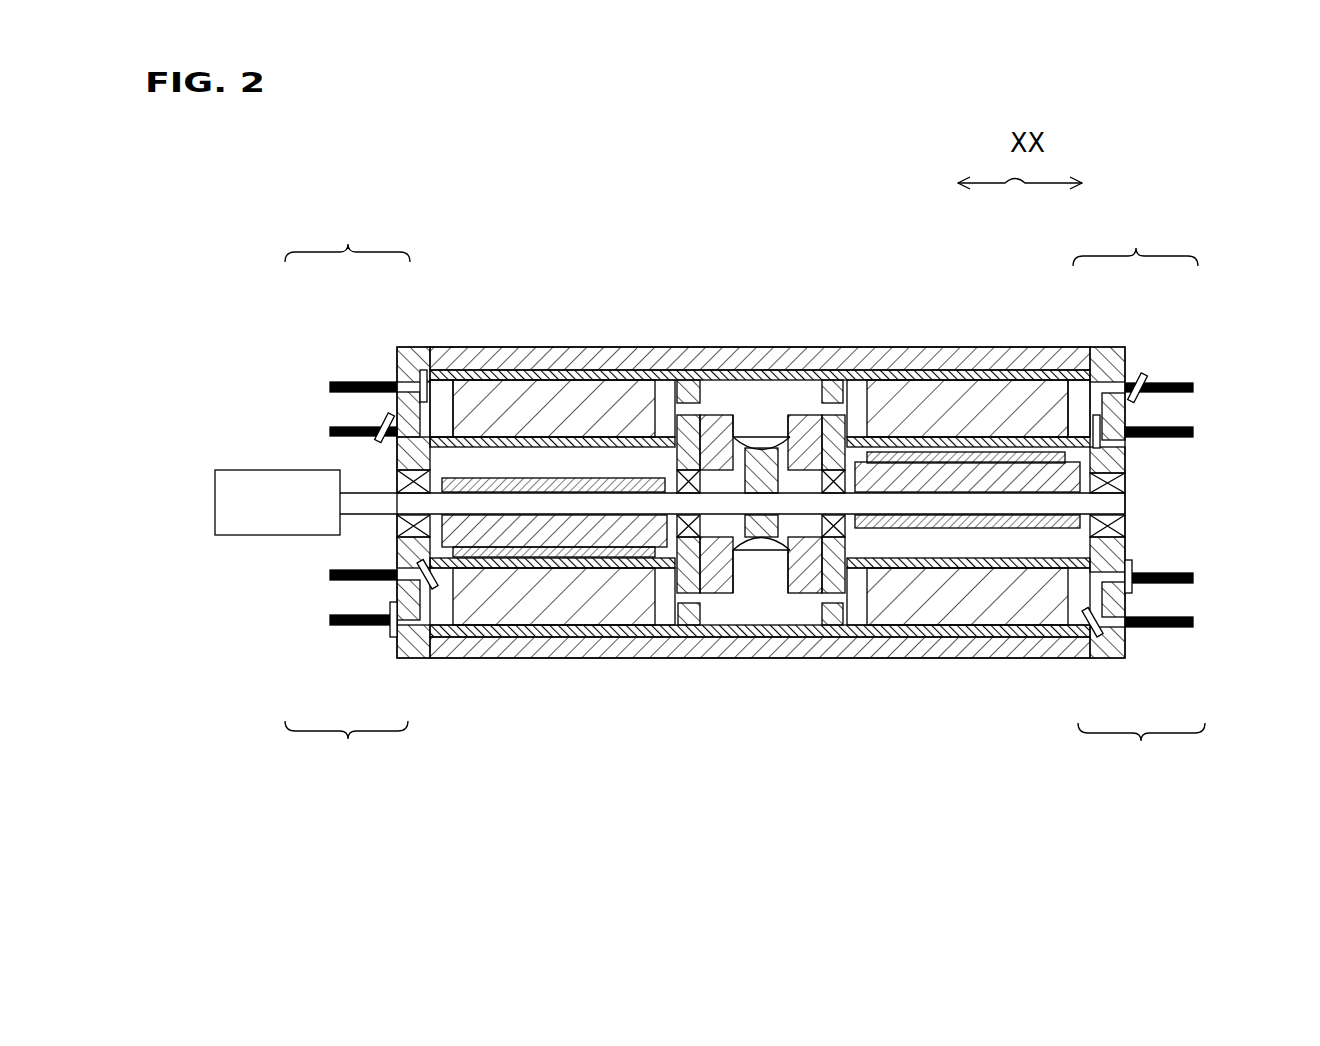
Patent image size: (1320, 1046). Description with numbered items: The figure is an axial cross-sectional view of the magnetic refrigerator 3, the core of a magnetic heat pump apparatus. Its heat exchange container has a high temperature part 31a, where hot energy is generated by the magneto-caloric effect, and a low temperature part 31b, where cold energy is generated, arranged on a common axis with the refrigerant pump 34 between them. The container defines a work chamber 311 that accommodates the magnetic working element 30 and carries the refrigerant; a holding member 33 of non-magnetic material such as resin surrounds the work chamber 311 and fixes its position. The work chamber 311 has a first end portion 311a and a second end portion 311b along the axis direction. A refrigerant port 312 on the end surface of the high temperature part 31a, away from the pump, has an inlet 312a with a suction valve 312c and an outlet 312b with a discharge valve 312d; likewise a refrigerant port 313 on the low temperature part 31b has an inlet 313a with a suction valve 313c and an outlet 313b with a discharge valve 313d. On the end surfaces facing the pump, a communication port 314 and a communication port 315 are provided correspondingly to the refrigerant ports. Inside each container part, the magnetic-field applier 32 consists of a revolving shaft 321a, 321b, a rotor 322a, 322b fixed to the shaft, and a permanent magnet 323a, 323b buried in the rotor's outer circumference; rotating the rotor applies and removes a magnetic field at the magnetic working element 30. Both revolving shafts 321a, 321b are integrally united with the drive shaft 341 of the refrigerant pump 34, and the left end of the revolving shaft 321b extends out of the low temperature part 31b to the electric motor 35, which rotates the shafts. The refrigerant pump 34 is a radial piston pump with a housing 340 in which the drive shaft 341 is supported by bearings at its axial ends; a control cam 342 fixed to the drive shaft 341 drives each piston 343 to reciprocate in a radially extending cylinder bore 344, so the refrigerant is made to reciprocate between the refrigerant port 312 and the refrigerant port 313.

The magnetic refrigerator 3 is at (468, 216).
The magnetic working element 30 is at (570, 402).
The high temperature part 31a is at (934, 350).
The low temperature part 31b is at (540, 350).
The work chamber 311 is at (660, 412).
The first end portion 311a is at (1070, 412).
The second end portion 311b is at (483, 392).
The refrigerant port 312 is at (1139, 494).
The inlet 312a is at (1108, 400).
The outlet 312b is at (1122, 355).
The suction valve 312c is at (1125, 443).
The discharge valve 312d is at (1142, 373).
The refrigerant port 313 is at (357, 492).
The inlet 313a is at (425, 395).
The outlet 313b is at (398, 400).
The suction valve 313c is at (447, 400).
The discharge valve 313d is at (385, 435).
The communication port 314 is at (834, 398).
The communication port 315 is at (687, 398).
The magnetic-field applier 32 is at (470, 563).
The revolving shaft 321a is at (1125, 508).
The revolving shaft 321b is at (372, 505).
The rotor 322a is at (965, 458).
The rotor 322b is at (600, 552).
The permanent magnet 323a is at (933, 470).
The permanent magnet 323b is at (528, 553).
The holding member 33 is at (612, 440).
The refrigerant pump 34 is at (786, 348).
The housing 340 is at (738, 446).
The drive shaft 341 is at (740, 506).
The control cam 342 is at (760, 434).
The piston 343 is at (767, 446).
The cylinder bore 344 is at (803, 430).
The electric motor 35 is at (222, 536).